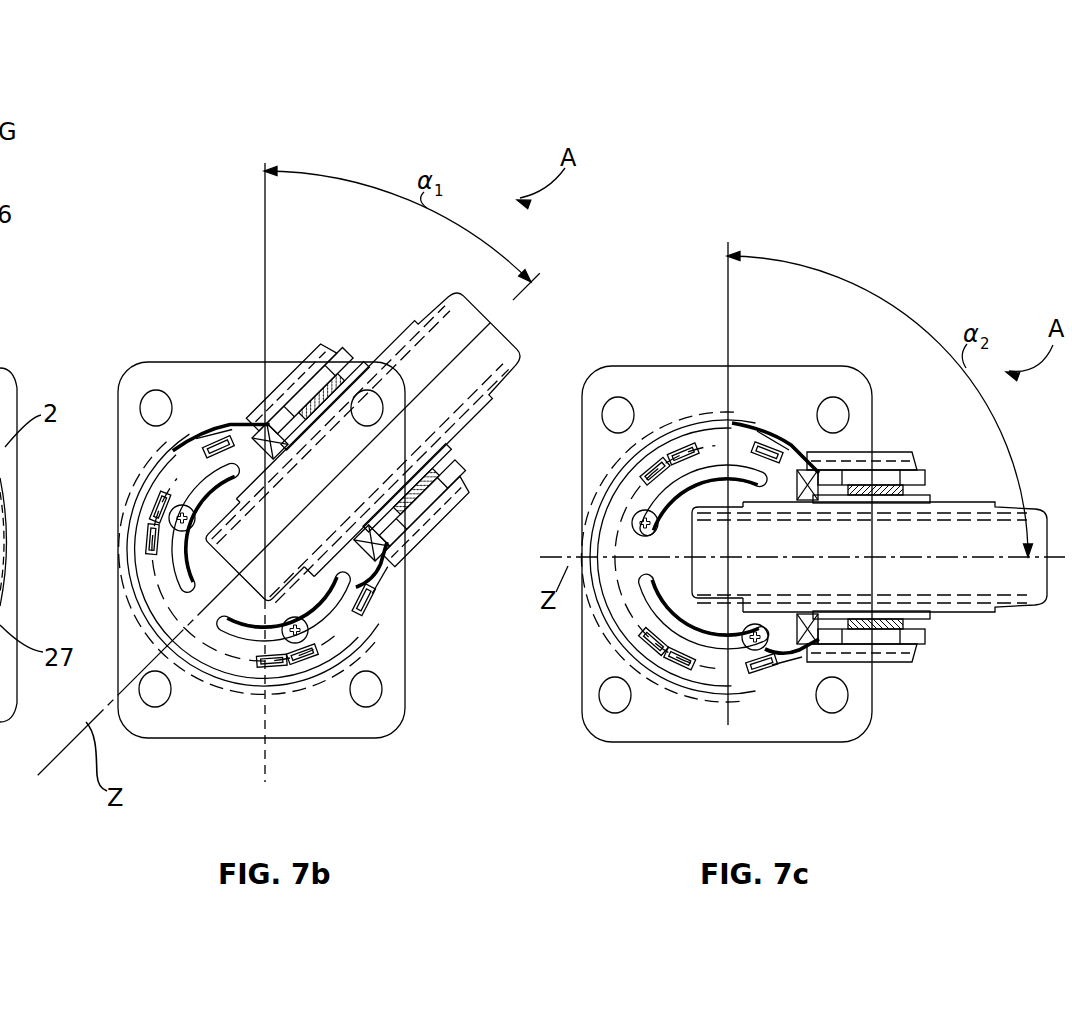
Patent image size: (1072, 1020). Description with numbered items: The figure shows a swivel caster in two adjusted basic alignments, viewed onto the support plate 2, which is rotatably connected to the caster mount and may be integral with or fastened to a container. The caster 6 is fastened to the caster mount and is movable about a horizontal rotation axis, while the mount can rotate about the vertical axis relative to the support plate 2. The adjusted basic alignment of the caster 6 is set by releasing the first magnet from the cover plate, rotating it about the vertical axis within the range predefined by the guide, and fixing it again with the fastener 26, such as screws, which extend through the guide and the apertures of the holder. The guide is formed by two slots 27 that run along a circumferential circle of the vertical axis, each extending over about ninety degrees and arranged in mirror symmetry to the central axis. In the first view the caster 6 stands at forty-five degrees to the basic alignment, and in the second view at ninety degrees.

In FIG. 7b, the support plate 2 is at (386, 718).
In FIG. 7c, the support plate 2 is at (631, 725).
In FIG. 7b, the caster 6 is at (488, 360).
In FIG. 7c, the caster 6 is at (997, 576).
In FIG. 7b, the fastener 26 is at (170, 519).
In FIG. 7c, the fastener 26 is at (633, 520).
In FIG. 7b, the slots 27 is at (205, 488).
In FIG. 7c, the slots 27 is at (677, 480).